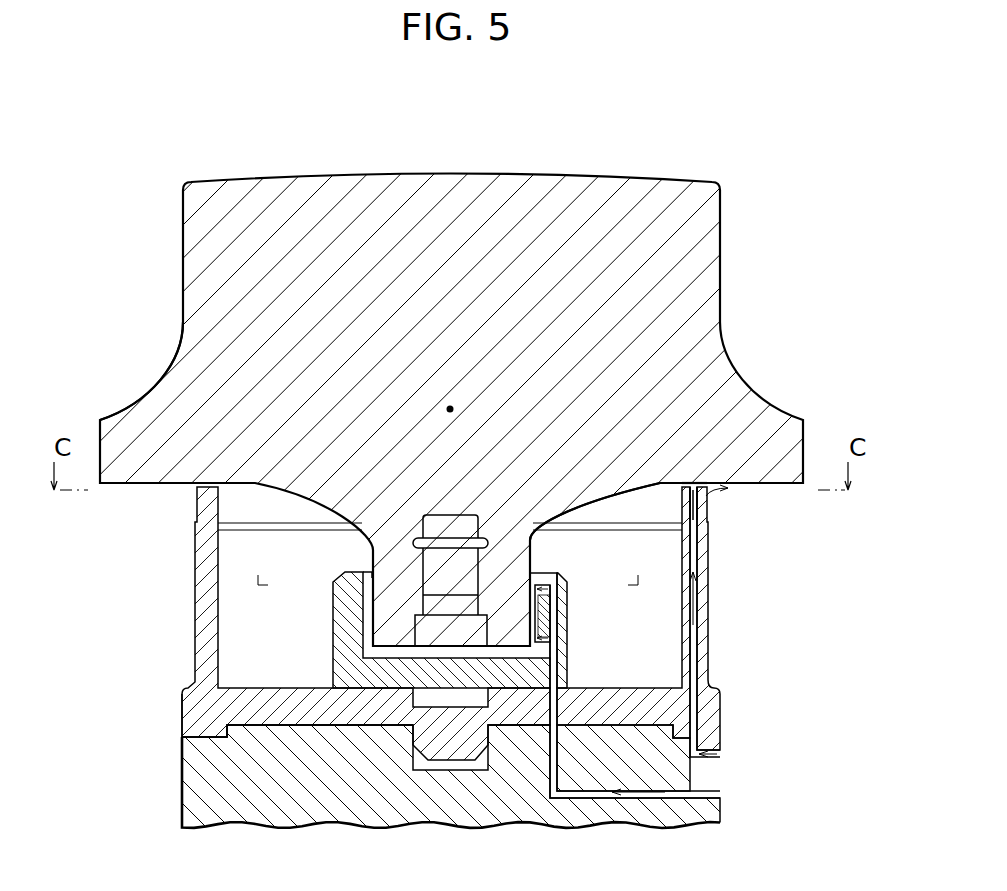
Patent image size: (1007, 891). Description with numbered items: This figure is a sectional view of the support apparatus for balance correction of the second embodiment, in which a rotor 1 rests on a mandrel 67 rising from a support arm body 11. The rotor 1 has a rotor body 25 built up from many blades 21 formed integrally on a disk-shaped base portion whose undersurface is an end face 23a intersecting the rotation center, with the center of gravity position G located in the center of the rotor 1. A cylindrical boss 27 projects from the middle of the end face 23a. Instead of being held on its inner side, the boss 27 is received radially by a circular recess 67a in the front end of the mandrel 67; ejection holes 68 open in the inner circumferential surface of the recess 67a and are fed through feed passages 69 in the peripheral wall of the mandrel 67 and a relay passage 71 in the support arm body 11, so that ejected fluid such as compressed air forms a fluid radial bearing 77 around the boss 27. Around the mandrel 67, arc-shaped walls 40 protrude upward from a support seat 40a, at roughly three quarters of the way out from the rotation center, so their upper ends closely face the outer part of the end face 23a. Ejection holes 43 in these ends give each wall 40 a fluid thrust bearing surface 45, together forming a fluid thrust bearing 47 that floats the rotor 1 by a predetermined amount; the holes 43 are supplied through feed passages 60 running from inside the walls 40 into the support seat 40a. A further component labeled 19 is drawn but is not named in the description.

The rotor 1 is at (647, 148).
The blades 21 is at (722, 240).
The rotor body 25 is at (168, 341).
The center of gravity position G is at (455, 405).
The end face 23a is at (746, 488).
The boss 27 is at (546, 518).
The ejection holes 43 is at (691, 484).
The fluid thrust bearing surface 45 is at (690, 487).
The fluid thrust bearing 47 is at (690, 487).
The walls 40 is at (196, 592).
The support seat 40a is at (196, 712).
The support arm body 11 is at (285, 805).
The mandrel 67 is at (334, 600).
The circular recess 67a is at (378, 585).
The ejection holes 68 is at (556, 568).
The feed passages 69 is at (550, 652).
The fluid radial bearing 77 is at (550, 664).
The feed passages 60 is at (698, 637).
The relay passage 71 is at (695, 792).
The pin 19 is at (463, 517).